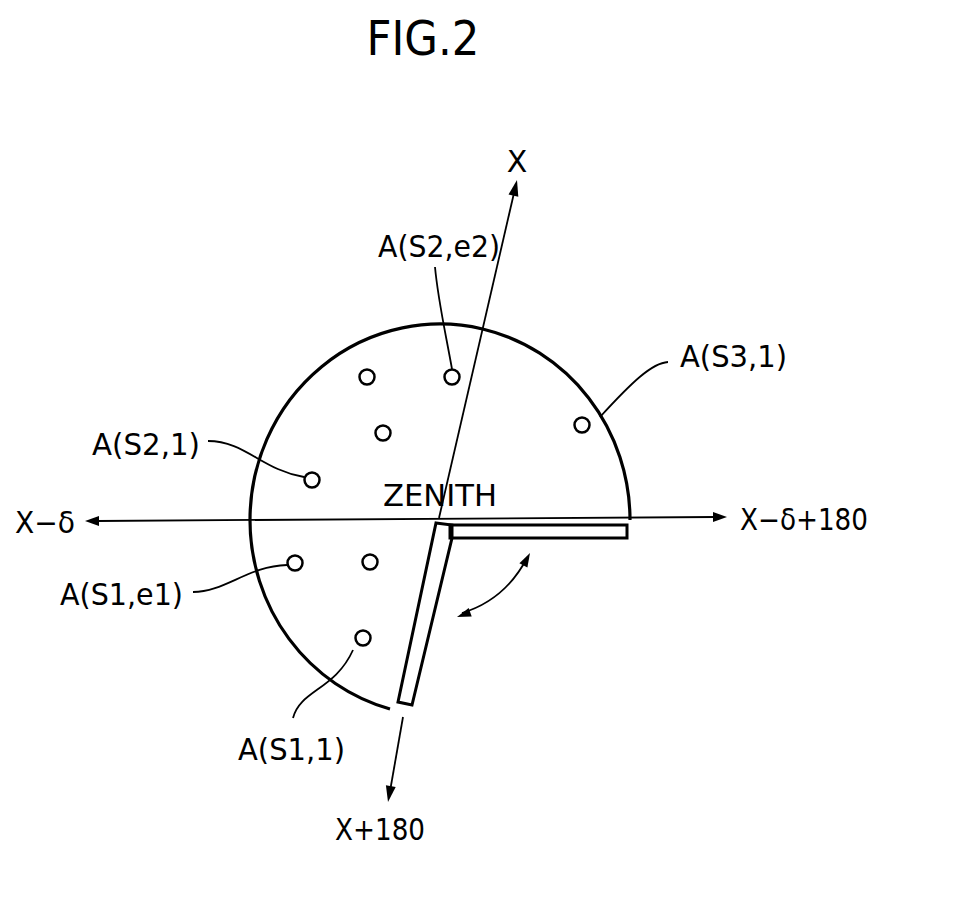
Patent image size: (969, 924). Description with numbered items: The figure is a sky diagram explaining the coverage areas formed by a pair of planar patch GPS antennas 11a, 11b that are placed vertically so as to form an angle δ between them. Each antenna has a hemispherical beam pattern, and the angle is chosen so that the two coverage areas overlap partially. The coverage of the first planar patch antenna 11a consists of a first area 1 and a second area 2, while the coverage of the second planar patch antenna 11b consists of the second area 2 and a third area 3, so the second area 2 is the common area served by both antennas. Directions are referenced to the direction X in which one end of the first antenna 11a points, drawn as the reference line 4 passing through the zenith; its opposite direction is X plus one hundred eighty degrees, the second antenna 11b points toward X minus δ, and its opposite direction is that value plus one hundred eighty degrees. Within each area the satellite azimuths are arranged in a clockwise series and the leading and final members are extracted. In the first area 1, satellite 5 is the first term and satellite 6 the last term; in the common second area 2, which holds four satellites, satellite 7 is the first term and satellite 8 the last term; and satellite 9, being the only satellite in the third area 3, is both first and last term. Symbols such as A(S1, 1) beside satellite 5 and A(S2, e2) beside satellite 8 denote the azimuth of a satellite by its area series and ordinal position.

The first area 1 is at (287, 625).
The second area 2 is at (310, 388).
The third area 3 is at (540, 362).
The reference line X 4 is at (495, 293).
The satellite 5 is at (369, 633).
The satellite 6 is at (300, 570).
The satellite 7 is at (312, 472).
The satellite 8 is at (444, 377).
The satellite 9 is at (574, 425).
The first planar patch antenna 11a is at (425, 680).
The second planar patch antenna 11b is at (596, 540).